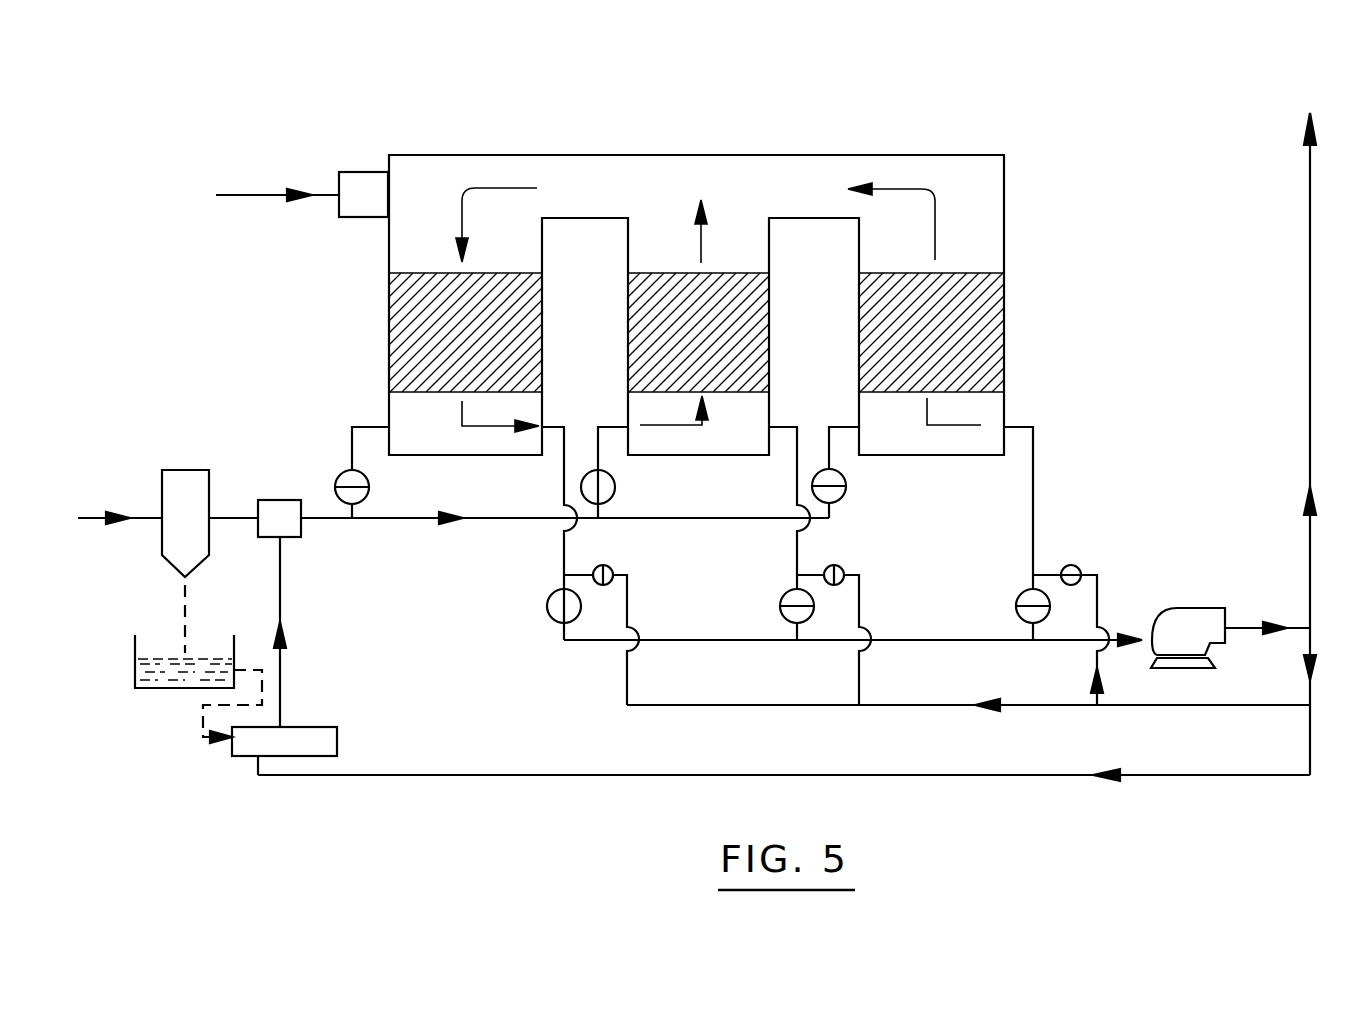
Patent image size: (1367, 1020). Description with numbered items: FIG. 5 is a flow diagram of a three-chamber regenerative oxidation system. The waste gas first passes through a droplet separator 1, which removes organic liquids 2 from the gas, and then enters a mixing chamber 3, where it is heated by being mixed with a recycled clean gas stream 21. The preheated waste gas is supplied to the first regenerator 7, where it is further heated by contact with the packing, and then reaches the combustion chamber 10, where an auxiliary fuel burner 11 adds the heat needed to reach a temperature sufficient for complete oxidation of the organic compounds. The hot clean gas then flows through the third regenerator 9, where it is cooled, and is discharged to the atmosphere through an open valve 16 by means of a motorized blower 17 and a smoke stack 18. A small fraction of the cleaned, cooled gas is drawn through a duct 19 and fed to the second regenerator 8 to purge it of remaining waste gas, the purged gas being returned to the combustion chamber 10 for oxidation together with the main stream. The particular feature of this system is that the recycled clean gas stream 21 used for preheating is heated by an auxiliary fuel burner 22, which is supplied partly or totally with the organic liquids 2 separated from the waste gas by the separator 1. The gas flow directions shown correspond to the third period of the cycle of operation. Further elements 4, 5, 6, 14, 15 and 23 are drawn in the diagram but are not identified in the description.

The droplet separator 1 is at (162, 470).
The organic liquids 2 is at (135, 662).
The mixing chamber 3 is at (280, 500).
The valve 4 is at (376, 490).
The valve 5 is at (617, 490).
The valve 6 is at (847, 492).
The first regenerator 7 is at (397, 313).
The second regenerator 8 is at (638, 315).
The third regenerator 9 is at (870, 318).
The combustion chamber 10 is at (625, 157).
The auxiliary fuel burner 11 is at (360, 181).
The valve 14 is at (548, 604).
The valve 15 is at (780, 606).
The valve 16 is at (1020, 614).
The motorized blower 17 is at (1197, 612).
The smoke stack 18 is at (1311, 327).
The duct 19 is at (945, 708).
The recycled clean gas stream 21 is at (1213, 773).
The auxiliary fuel burner 22 is at (338, 728).
The supply line 23 is at (283, 670).